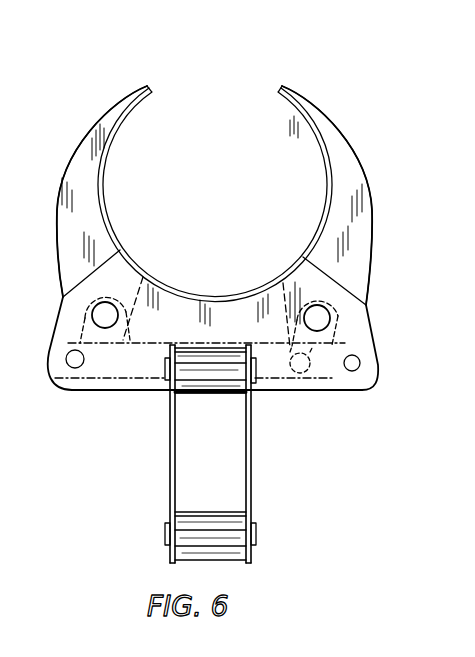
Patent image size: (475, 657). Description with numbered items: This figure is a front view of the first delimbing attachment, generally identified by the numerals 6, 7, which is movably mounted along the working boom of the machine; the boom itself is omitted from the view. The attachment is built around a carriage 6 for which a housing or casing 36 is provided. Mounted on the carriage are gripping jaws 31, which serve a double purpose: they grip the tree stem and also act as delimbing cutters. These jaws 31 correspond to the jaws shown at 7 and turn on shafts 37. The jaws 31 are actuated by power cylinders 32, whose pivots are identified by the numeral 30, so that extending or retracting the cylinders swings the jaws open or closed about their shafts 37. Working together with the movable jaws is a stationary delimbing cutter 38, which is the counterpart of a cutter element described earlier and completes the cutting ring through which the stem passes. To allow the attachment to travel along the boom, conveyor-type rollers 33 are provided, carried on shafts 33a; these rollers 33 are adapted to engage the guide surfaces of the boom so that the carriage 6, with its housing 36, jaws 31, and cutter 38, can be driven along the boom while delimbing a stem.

The carriage 6 is at (382, 197).
The gripping jaws 7 is at (207, 100).
The pivots 30 is at (72, 358).
The gripping jaws 31 is at (93, 150).
The power cylinders 32 is at (67, 392).
The conveyor-type rollers 33 is at (202, 375).
The shafts 33a is at (165, 368).
The housing 36 is at (327, 373).
The shafts 37 is at (97, 313).
The stationary delimbing cutter 38 is at (198, 292).